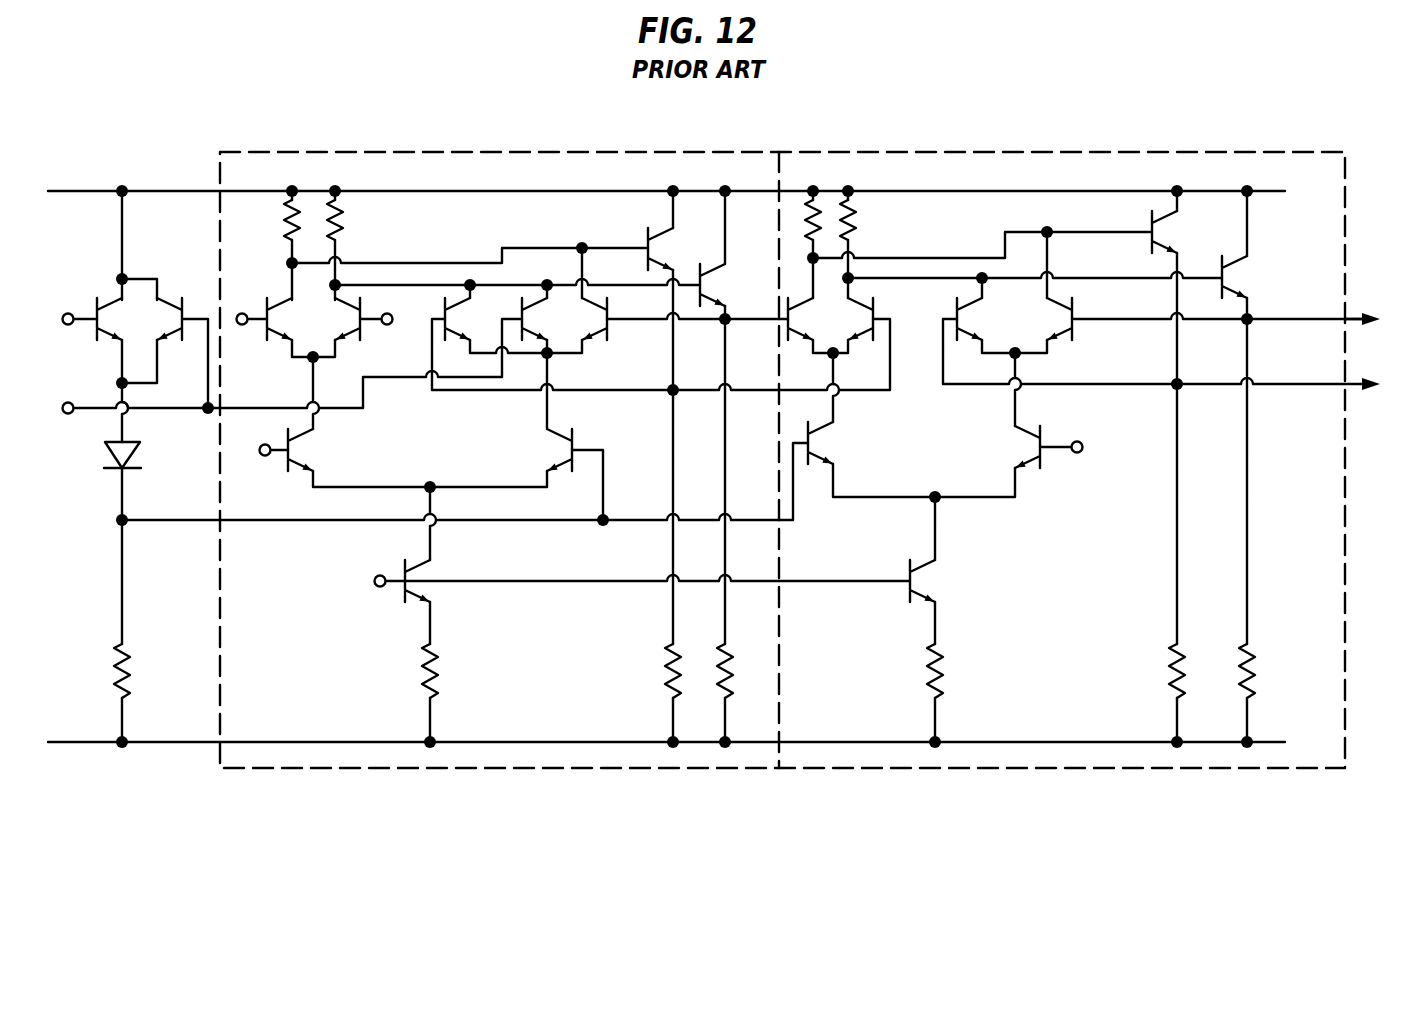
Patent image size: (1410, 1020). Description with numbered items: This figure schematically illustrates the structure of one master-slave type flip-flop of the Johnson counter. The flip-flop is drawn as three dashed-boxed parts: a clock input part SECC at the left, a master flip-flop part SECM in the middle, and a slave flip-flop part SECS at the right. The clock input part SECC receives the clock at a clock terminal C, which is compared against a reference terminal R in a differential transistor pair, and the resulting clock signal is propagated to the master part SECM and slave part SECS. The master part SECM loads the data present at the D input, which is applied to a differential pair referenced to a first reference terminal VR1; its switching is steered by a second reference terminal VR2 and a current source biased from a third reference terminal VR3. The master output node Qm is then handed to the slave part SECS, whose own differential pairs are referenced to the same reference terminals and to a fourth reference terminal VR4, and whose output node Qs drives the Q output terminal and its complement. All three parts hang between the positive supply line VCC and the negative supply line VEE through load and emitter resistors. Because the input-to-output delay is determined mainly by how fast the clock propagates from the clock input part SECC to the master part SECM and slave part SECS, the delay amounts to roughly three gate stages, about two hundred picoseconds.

The clock input part SECC is at (130, 432).
The master flip-flop part SECM is at (503, 423).
The slave flip-flop part SECS is at (1093, 420).
The clock input terminal C is at (71, 307).
The reference input terminal R is at (130, 409).
The D input D is at (247, 307).
The first reference voltage terminal VR1 is at (397, 309).
The second reference voltage terminal VR2 is at (260, 437).
The third reference voltage terminal VR3 is at (375, 569).
The fourth reference voltage terminal VR4 is at (1067, 443).
The master output transistor / node Qm is at (743, 323).
The slave output transistor / node Qs is at (1283, 352).
The output terminals Q and Q-bar Q is at (1376, 353).
The positive supply line VCC is at (694, 191).
The negative supply line VEE is at (692, 742).